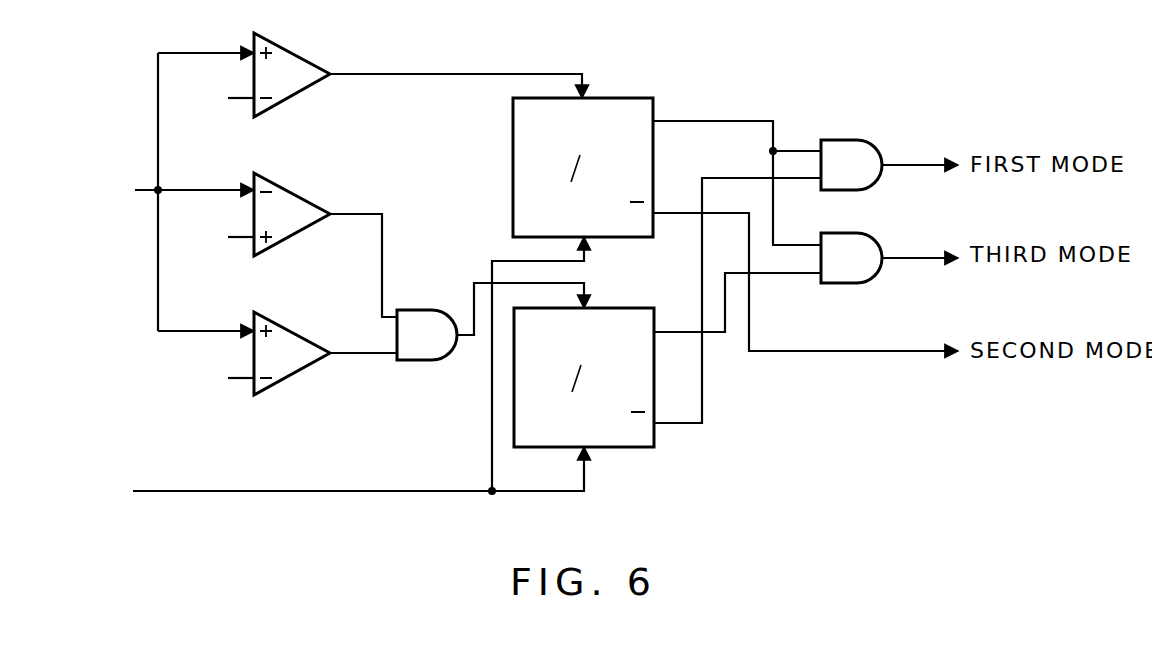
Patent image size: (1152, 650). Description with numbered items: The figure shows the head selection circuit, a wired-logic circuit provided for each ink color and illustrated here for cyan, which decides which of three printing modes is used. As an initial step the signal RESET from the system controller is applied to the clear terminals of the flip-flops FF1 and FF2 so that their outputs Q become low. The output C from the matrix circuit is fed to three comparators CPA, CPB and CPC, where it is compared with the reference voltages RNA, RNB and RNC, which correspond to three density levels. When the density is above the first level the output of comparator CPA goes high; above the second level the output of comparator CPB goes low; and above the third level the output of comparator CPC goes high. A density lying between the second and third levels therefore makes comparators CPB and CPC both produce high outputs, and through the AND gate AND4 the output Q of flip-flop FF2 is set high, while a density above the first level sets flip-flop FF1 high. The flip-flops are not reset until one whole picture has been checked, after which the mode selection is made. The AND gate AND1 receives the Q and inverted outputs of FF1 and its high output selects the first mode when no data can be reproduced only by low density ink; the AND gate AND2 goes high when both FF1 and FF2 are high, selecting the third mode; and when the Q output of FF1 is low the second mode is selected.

The comparator CPA is at (305, 58).
The comparator CPB is at (305, 198).
The comparator CPC is at (290, 328).
The AND gate AND4 is at (425, 310).
The flip-flop FF1 is at (615, 97).
The flip-flop FF2 is at (610, 307).
The AND gate AND1 is at (855, 140).
The AND gate AND2 is at (860, 233).
The output from matrix circuit C is at (183, 192).
The reference voltage RNA is at (213, 98).
The reference voltage RNB is at (213, 237).
The reference voltage RNC is at (213, 378).
The output signal RESET is at (318, 369).